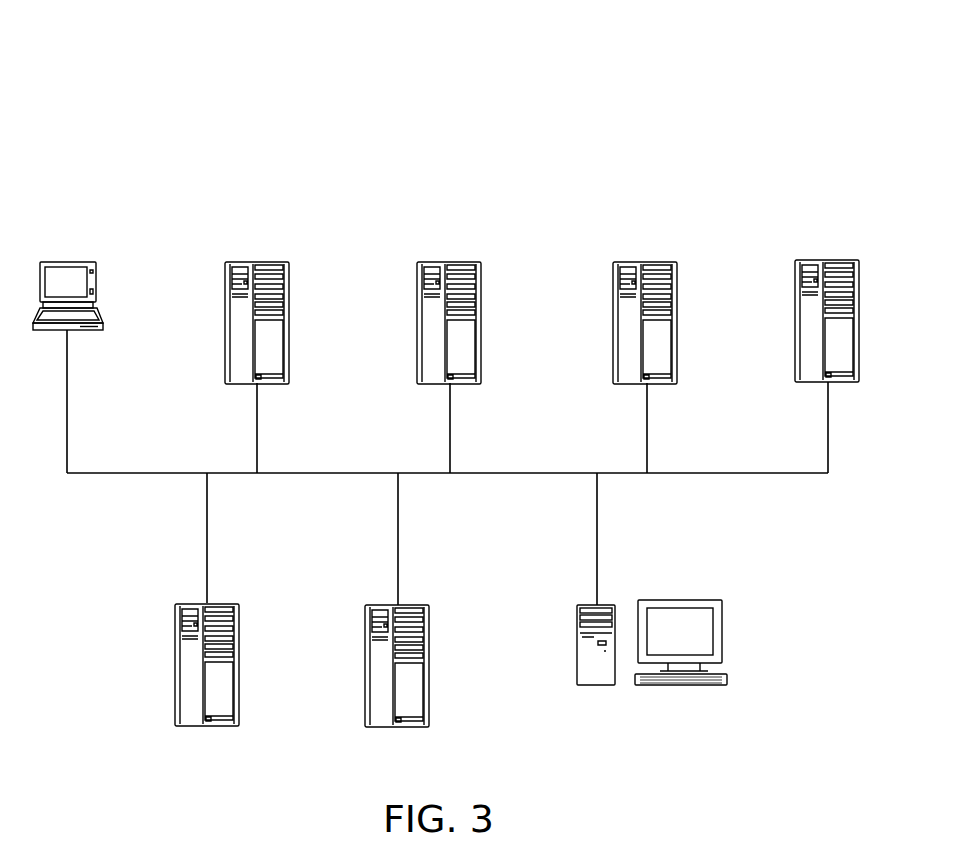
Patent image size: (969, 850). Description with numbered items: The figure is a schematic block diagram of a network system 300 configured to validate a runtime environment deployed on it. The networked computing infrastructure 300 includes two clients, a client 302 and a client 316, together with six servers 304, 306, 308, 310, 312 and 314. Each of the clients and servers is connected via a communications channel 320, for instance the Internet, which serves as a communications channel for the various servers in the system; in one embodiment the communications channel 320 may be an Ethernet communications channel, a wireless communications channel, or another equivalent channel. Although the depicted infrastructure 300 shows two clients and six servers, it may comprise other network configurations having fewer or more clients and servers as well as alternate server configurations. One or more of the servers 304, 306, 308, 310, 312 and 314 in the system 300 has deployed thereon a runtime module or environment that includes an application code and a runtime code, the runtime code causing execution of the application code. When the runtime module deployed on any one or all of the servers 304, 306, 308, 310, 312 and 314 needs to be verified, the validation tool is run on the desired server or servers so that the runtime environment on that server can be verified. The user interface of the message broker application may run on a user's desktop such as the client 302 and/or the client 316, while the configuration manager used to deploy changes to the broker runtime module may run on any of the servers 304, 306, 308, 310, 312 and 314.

The network system 300 is at (653, 98).
The client 302 is at (73, 262).
The server 304 is at (250, 262).
The server 306 is at (442, 262).
The server 308 is at (640, 262).
The server 310 is at (820, 260).
The server 312 is at (238, 702).
The server 314 is at (430, 695).
The client 316 is at (722, 633).
The communications channel 320 is at (103, 473).